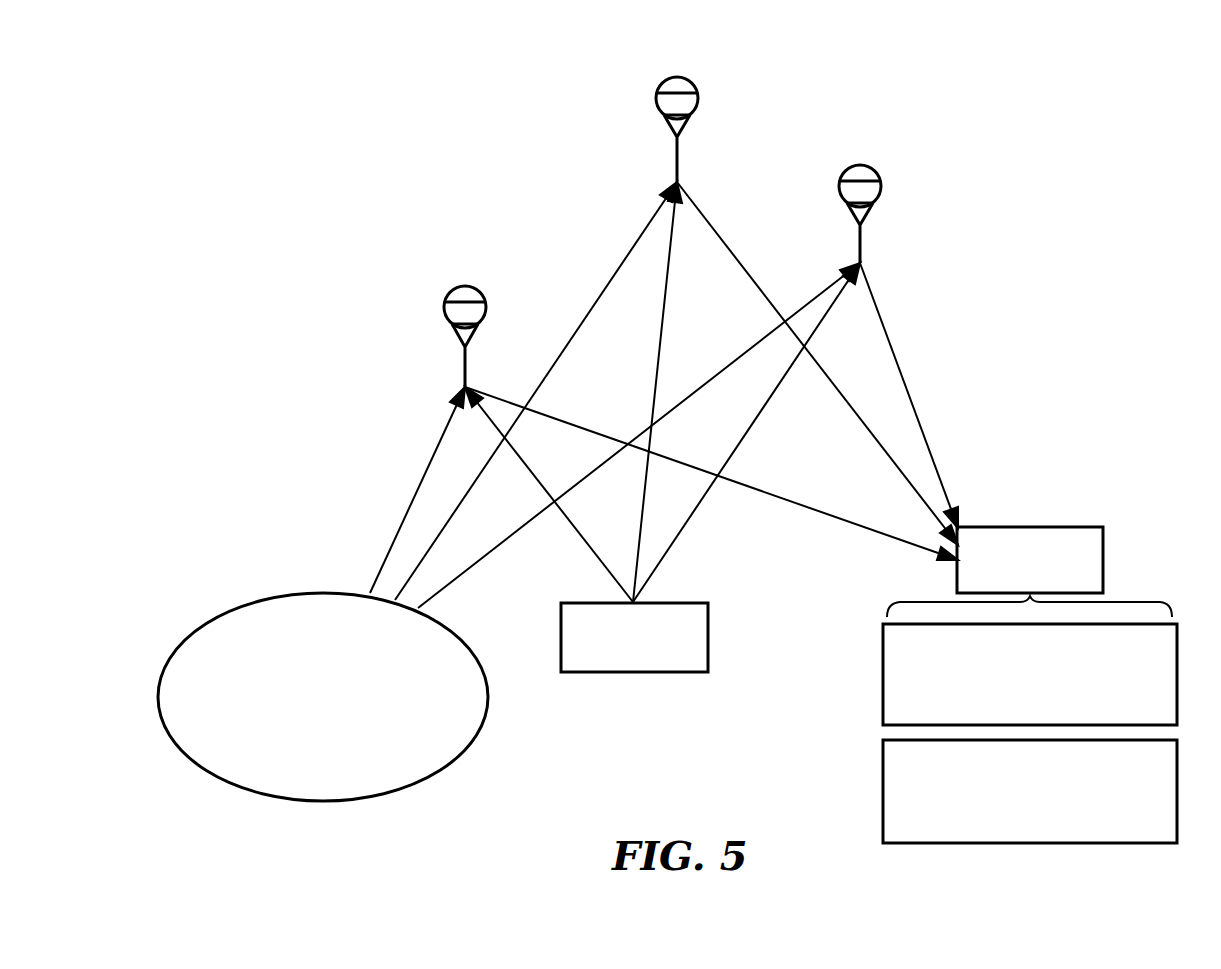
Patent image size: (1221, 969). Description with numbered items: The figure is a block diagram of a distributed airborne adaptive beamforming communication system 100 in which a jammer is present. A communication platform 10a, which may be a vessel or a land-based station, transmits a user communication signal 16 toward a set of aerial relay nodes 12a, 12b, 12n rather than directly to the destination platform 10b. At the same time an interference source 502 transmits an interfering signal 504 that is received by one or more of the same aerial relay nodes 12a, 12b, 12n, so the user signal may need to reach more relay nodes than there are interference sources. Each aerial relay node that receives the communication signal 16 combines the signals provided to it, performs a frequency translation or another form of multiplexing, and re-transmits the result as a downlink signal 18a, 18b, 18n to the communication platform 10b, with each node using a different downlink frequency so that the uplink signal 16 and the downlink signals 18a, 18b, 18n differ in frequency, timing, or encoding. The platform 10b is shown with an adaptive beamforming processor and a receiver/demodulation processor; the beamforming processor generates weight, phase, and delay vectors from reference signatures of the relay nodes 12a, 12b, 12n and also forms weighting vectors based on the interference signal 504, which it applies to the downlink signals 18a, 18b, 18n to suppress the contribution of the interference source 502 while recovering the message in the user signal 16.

The communication system 100 is at (1055, 135).
The interference source 502 is at (323, 697).
The interfering signal 504 is at (625, 250).
The aerial relay node 12a is at (465, 283).
The aerial relay node 12b is at (667, 82).
The aerial relay node 12n is at (870, 163).
The communication platform 10a is at (634, 637).
The communication platform 10b is at (1030, 685).
The communication signal 16 is at (668, 268).
The downlink signal 18a is at (582, 425).
The downlink signal 18b is at (767, 297).
The downlink signal 18n is at (903, 393).